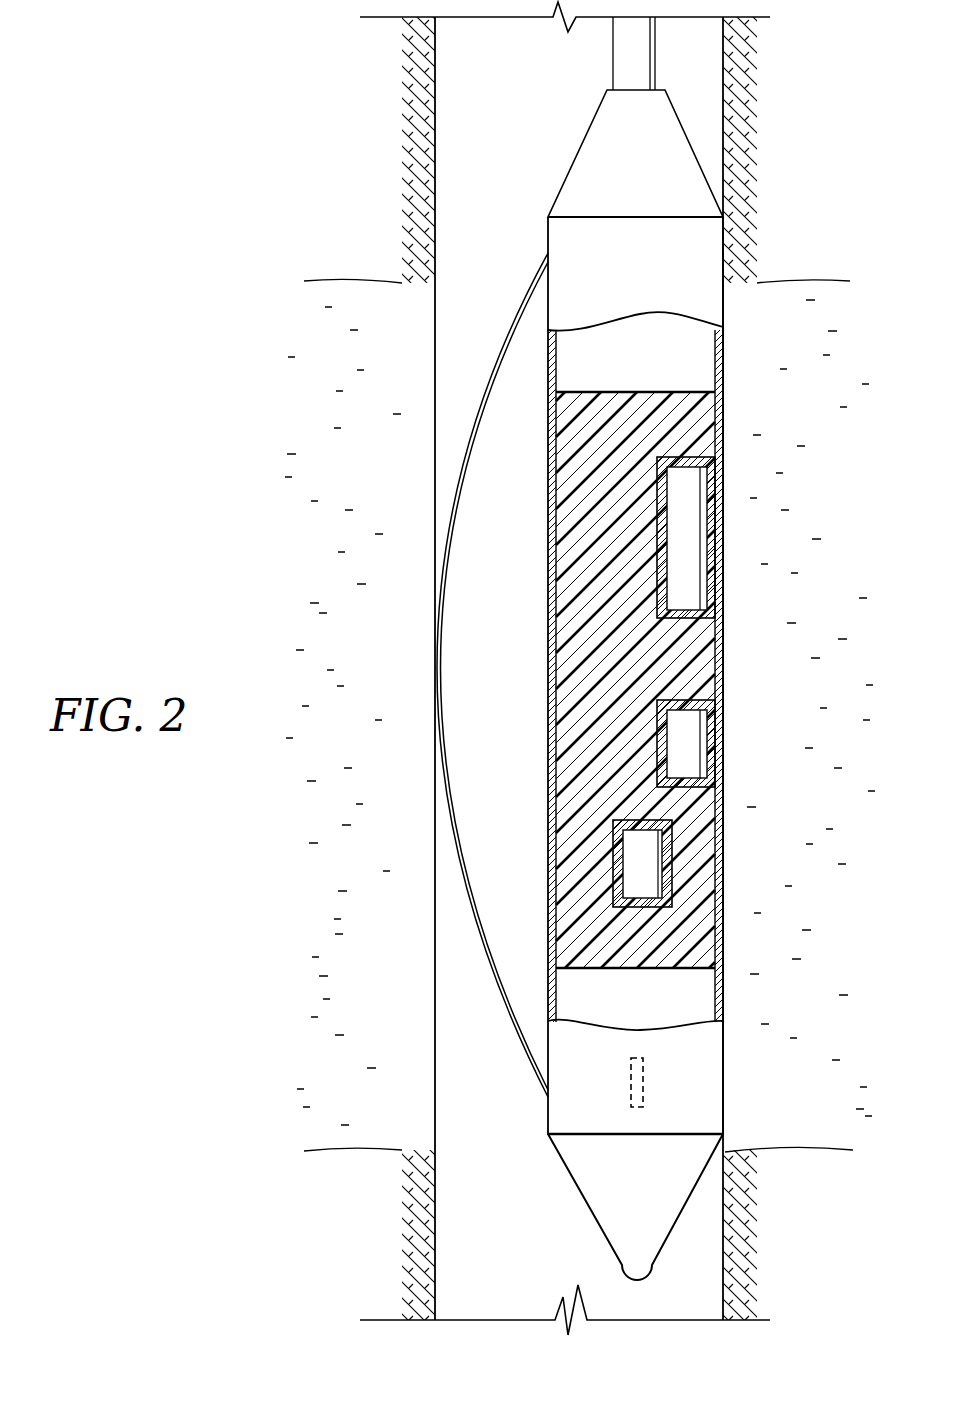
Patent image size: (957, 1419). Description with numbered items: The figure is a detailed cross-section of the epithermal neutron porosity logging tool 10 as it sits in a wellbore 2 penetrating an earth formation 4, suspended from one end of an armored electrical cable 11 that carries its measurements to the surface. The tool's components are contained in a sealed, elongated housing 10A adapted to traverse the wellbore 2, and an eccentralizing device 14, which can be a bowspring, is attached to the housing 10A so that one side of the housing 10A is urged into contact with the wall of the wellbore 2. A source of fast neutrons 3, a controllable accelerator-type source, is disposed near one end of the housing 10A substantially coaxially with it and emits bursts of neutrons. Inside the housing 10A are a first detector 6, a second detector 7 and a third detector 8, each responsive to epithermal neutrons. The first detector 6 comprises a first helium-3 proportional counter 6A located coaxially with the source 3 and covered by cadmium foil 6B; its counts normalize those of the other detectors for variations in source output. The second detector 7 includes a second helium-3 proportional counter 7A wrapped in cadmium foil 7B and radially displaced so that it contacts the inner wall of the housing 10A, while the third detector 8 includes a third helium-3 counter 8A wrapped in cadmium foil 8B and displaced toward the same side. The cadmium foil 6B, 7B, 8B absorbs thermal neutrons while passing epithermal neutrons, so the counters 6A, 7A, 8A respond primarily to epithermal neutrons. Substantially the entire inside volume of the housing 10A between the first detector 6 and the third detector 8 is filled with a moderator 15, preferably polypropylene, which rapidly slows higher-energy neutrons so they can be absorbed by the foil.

The wellbore 2 is at (470, 137).
The source of fast neutrons 3 is at (643, 1076).
The earth formation 4 is at (837, 1028).
The first detector 6 is at (730, 861).
The first helium-3 proportional counter 6A is at (648, 882).
The cadmium foil 6B is at (668, 836).
The second detector 7 is at (752, 740).
The second helium-3 proportional counter 7A is at (694, 762).
The cadmium foil 7B is at (713, 718).
The third detector 8 is at (752, 537).
The third helium-3 counter 8A is at (693, 574).
The cadmium foil 8B is at (713, 487).
The epithermal neutron porosity logging tool 10 is at (752, 1097).
The housing 10A is at (570, 237).
The armored electrical cable 11 is at (625, 70).
The eccentralizing device 14 is at (500, 338).
The moderator 15 is at (572, 541).